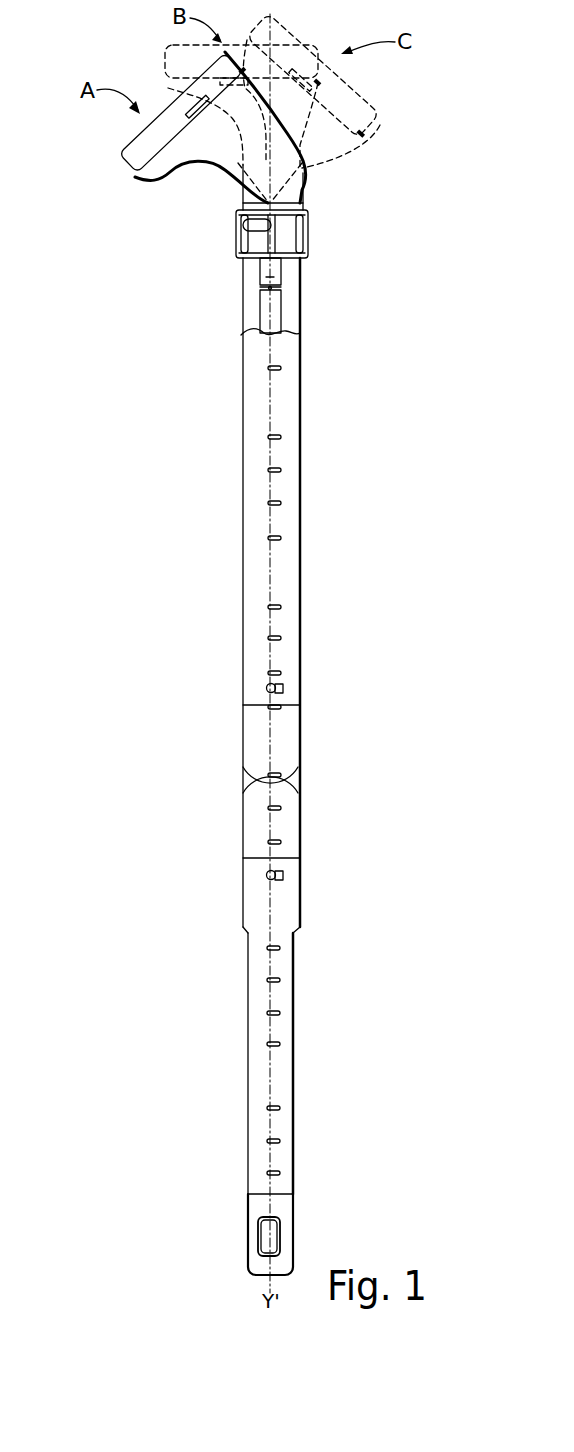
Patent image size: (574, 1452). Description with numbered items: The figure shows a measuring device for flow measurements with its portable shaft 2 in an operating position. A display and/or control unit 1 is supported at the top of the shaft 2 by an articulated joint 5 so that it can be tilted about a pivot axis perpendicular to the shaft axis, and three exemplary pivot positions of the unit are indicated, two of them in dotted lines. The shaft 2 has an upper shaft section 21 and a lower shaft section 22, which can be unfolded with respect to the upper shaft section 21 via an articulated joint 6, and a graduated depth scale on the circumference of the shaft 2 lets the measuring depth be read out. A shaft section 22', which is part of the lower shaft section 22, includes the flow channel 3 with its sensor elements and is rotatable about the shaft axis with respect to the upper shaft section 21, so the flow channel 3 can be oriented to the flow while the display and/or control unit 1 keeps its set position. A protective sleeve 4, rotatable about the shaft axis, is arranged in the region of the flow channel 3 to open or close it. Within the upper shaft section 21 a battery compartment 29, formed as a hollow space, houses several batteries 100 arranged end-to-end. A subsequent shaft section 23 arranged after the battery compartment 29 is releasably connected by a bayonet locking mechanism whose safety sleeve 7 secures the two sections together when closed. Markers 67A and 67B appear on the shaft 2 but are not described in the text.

The display and/or control unit 1 is at (178, 172).
The articulated joint 5 is at (216, 188).
The subsequent shaft section 23 is at (307, 197).
The safety sleeve 7 is at (287, 232).
The batteries 100 is at (263, 268).
The battery compartment 29 is at (290, 310).
The shaft 2 is at (219, 600).
The upper shaft section 21 is at (290, 552).
The upper position marker 67B is at (263, 687).
The articulated joint 6 is at (313, 785).
The lower position marker 67A is at (263, 875).
The lower shaft section 22 is at (308, 915).
The shaft section 22' is at (305, 1063).
The protective sleeve 4 is at (257, 1203).
The flow channel 3 is at (290, 1240).